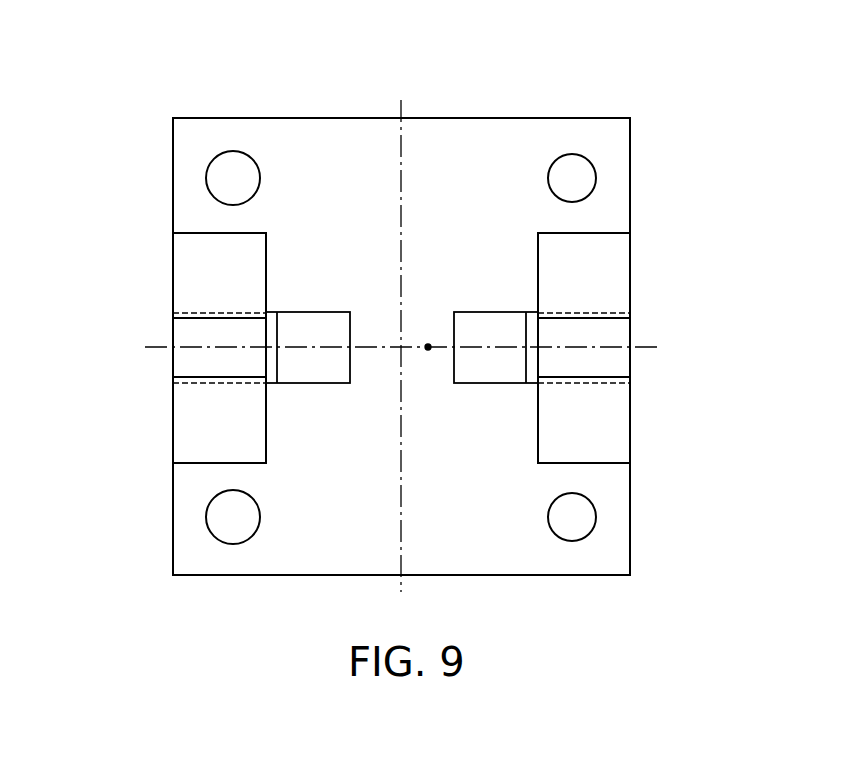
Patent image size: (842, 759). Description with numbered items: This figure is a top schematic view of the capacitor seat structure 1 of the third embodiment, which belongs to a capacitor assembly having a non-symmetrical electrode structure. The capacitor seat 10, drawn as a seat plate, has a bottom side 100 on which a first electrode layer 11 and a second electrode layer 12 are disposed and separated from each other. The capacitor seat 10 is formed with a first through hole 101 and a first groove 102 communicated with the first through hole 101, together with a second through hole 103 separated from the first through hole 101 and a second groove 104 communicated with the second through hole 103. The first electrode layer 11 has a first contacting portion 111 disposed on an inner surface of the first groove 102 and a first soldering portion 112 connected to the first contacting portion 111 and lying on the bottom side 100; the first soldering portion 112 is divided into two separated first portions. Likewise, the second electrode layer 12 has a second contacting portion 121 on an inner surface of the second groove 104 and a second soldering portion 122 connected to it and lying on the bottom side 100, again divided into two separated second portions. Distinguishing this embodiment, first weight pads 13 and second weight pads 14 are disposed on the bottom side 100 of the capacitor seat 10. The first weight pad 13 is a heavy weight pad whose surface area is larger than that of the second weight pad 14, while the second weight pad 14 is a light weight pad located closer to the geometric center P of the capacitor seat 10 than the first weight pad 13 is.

The capacitor seat structure 1 is at (60, 17).
The capacitor seat 10 is at (451, 116).
The bottom side 100 is at (373, 148).
The first through hole 101 is at (313, 331).
The first groove 102 is at (274, 358).
The second through hole 103 is at (492, 331).
The second groove 104 is at (528, 358).
The first electrode layer 11 is at (87, 283).
The first contacting portion 111 is at (193, 336).
The first soldering portion 112 is at (193, 283).
The second electrode layer 12 is at (720, 283).
The second contacting portion 121 is at (612, 336).
The second soldering portion 122 is at (612, 283).
The first weight pad 13 is at (208, 172).
The second weight pad 14 is at (594, 172).
The geometric center P is at (429, 342).